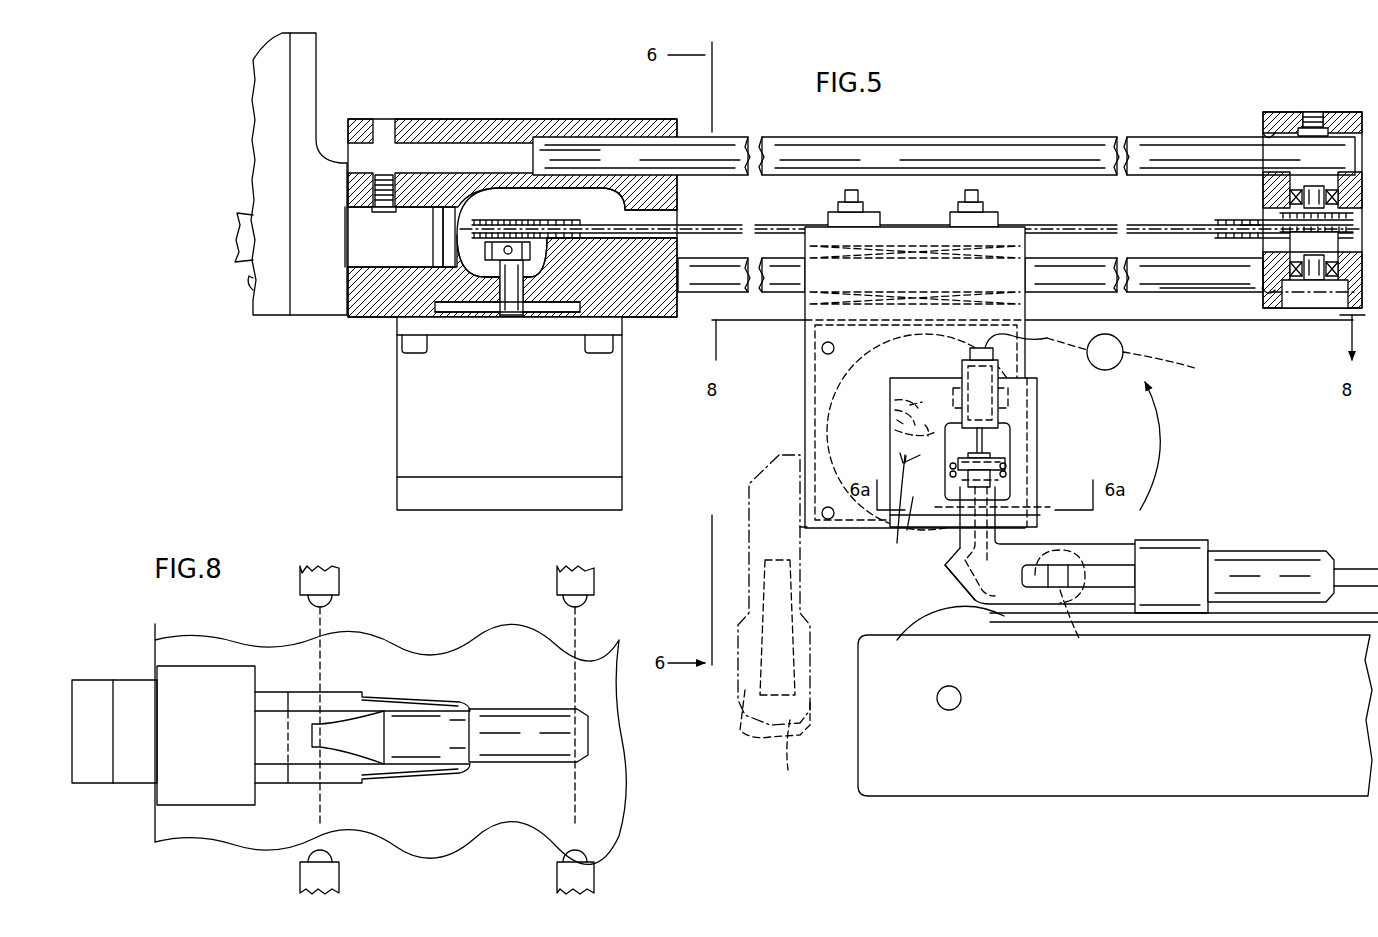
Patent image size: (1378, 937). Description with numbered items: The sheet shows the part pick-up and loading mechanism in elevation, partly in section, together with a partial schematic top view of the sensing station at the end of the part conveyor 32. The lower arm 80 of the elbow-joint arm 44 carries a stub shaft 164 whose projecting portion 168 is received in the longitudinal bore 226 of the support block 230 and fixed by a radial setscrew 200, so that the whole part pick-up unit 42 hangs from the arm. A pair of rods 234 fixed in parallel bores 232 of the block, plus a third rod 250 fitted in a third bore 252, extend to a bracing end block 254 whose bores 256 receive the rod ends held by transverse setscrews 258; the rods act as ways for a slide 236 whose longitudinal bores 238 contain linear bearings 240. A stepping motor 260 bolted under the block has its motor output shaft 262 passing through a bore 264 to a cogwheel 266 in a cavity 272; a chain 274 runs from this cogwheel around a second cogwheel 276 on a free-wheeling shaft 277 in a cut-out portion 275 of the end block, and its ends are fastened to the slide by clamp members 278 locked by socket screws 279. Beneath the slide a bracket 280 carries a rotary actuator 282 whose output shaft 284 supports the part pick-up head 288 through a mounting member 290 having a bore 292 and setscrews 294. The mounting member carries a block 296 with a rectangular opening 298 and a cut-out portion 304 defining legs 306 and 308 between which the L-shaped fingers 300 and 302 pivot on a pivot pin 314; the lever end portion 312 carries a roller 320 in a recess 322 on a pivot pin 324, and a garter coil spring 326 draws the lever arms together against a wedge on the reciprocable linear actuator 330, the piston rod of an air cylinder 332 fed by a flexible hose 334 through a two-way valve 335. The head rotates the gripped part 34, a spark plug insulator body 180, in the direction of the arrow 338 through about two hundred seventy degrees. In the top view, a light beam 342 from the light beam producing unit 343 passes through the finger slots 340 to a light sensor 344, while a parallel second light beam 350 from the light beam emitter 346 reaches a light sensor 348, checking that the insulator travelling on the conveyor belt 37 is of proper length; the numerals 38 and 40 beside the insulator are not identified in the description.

In FIG. 5, the part conveyor 32 is at (880, 633).
In FIG. 8, the part conveyor 32 is at (430, 634).
In FIG. 5, the part 34 is at (1185, 538).
In FIG. 5, the conveyor belt 37 is at (972, 613).
In FIG. 5, the tool stub 38 is at (1356, 569).
In FIG. 5, the tool extension 40 is at (1364, 565).
In FIG. 5, the part pick-up unit 42 is at (516, 203).
In FIG. 5, the elbow-joint arm 44 is at (282, 68).
In FIG. 5, the lower arm 80 is at (253, 196).
In FIG. 5, the stub shaft 164 is at (266, 290).
In FIG. 5, the projecting portion 168 is at (421, 210).
In FIG. 5, the spark plug insulator body 180 is at (1266, 552).
In FIG. 8, the spark plug insulator body 180 is at (505, 710).
In FIG. 5, the setscrew 200 is at (404, 178).
In FIG. 5, the longitudinal bore 226 is at (374, 263).
In FIG. 5, the support block 230 is at (644, 119).
In FIG. 5, the parallel bores 232 is at (646, 316).
In FIG. 5, the rods 234 is at (1188, 290).
In FIG. 5, the slide 236 is at (808, 338).
In FIG. 5, the longitudinal bores 238 is at (1005, 290).
In FIG. 5, the linear bearings 240 is at (975, 252).
In FIG. 5, the third rod 250 is at (925, 147).
In FIG. 5, the third bore 252 is at (576, 137).
In FIG. 5, the bracing end block 254 is at (1272, 112).
In FIG. 5, the bores 256 is at (1265, 136).
In FIG. 5, the transverse setscrews 258 is at (1316, 112).
In FIG. 5, the stepping motor 260 is at (405, 440).
In FIG. 5, the motor output shaft 262 is at (515, 312).
In FIG. 5, the bore 264 is at (503, 314).
In FIG. 5, the cogwheel 266 is at (492, 277).
In FIG. 5, the cavity 272 is at (574, 190).
In FIG. 5, the chain 274 is at (560, 223).
In FIG. 5, the cut-out portion 275 is at (1270, 242).
In FIG. 5, the cogwheel 276 is at (1340, 228).
In FIG. 5, the free-wheeling shaft 277 is at (1318, 306).
In FIG. 5, the clamp member 278 is at (872, 212).
In FIG. 5, the socket screws 279 is at (845, 197).
In FIG. 5, the bracket 280 is at (810, 398).
In FIG. 5, the rotary actuator 282 is at (878, 528).
In FIG. 5, the output shaft 284 is at (896, 433).
In FIG. 5, the part pick-up head 288 is at (1040, 480).
In FIG. 8, the part pick-up head 288 is at (240, 664).
In FIG. 5, the mounting member 290 is at (898, 455).
In FIG. 5, the bore 292 is at (893, 400).
In FIG. 5, the setscrews 294 is at (894, 413).
In FIG. 5, the block 296 is at (1037, 397).
In FIG. 5, the rectangular opening 298 is at (1005, 448).
In FIG. 5, the finger 300 is at (1078, 555).
In FIG. 8, the finger 300 is at (345, 783).
In FIG. 8, the finger 302 is at (358, 690).
In FIG. 5, the cut-out portion 304 is at (960, 545).
In FIG. 5, the leg 306 is at (1050, 480).
In FIG. 5, the leg 308 is at (905, 540).
In FIG. 5, the lever end portion 312 is at (945, 522).
In FIG. 5, the pivot pin 314 is at (1015, 503).
In FIG. 5, the roller 320 is at (1047, 523).
In FIG. 5, the recess 322 is at (1040, 576).
In FIG. 5, the pivot pin 324 is at (948, 470).
In FIG. 5, the garter coil spring 326 is at (952, 458).
In FIG. 5, the reciprocable linear actuator 330 is at (985, 438).
In FIG. 5, the air cylinder 332 is at (962, 364).
In FIG. 5, the flexible hose 334 is at (1048, 337).
In FIG. 5, the two-way valve 335 is at (1140, 352).
In FIG. 5, the arrow 338 is at (1162, 440).
In FIG. 5, the longitudinal slot 340 is at (1040, 562).
In FIG. 8, the longitudinal slot 340 is at (300, 768).
In FIG. 8, the light beam 342 is at (330, 636).
In FIG. 5, the light beam producing unit 343 is at (1084, 625).
In FIG. 8, the light beam producing unit 343 is at (316, 603).
In FIG. 8, the light sensor 344 is at (333, 858).
In FIG. 8, the light beam emitter 346 is at (573, 604).
In FIG. 8, the light sensor 348 is at (590, 856).
In FIG. 8, the second light beam 350 is at (578, 800).